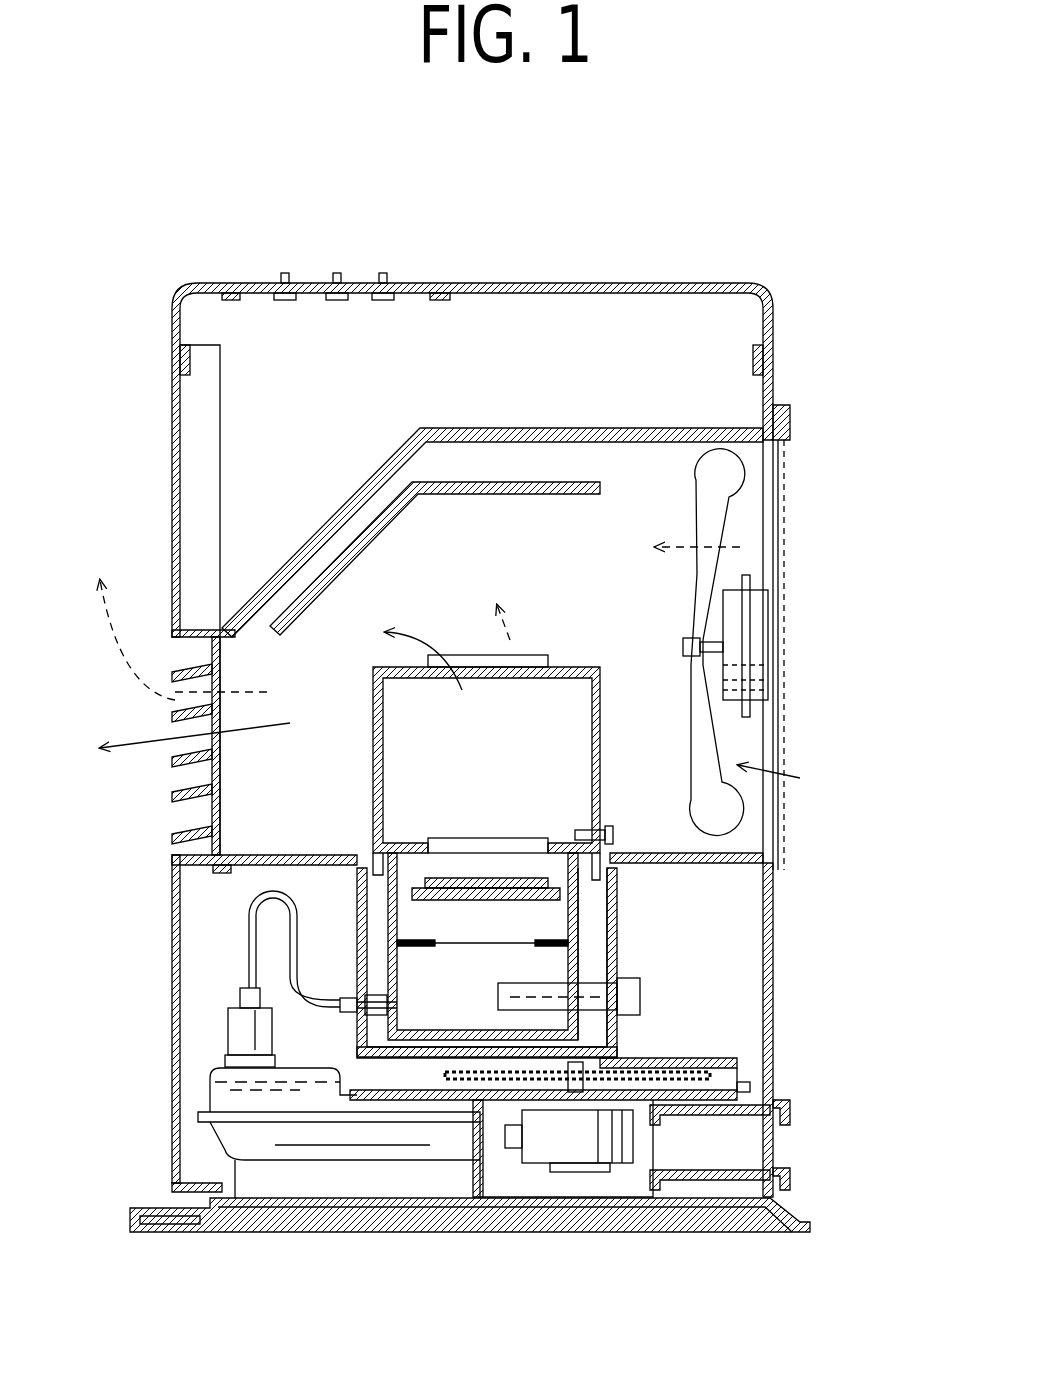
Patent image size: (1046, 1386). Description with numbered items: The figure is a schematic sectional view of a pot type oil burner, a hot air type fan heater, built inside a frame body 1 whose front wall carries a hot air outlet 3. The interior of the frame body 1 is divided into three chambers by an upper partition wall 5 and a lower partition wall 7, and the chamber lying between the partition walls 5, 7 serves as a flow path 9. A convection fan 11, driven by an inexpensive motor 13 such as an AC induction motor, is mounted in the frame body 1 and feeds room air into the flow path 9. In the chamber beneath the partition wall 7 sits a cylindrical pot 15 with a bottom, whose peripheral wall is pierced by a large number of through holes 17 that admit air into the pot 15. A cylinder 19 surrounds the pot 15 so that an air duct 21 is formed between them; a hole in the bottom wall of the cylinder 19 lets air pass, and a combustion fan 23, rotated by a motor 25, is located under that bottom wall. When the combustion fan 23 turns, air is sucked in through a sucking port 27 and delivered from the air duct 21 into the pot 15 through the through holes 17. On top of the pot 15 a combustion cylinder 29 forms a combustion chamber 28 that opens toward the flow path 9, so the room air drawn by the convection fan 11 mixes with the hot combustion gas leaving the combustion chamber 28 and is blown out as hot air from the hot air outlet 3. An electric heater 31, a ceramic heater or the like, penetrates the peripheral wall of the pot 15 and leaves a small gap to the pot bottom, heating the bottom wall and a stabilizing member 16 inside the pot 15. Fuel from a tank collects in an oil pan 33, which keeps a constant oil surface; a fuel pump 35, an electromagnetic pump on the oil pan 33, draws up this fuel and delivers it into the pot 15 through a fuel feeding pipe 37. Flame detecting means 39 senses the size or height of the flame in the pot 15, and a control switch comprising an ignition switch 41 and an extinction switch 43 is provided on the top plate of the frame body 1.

The frame body 1 is at (700, 283).
The hot air outlet 3 is at (172, 718).
The partition wall 5 is at (645, 428).
The partition wall 7 is at (712, 870).
The flow path 9 is at (490, 537).
The convection fan 11 is at (745, 522).
The motor 13 is at (765, 625).
The pot 15 is at (478, 1004).
The stabilizing member 16 is at (515, 878).
The through holes 17 is at (362, 900).
The cylinder 19 is at (352, 938).
The air duct 21 is at (600, 922).
The combustion fan 23 is at (615, 1090).
The motor 25 is at (570, 1150).
The sucking port 27 is at (750, 1140).
The combustion chamber 28 is at (470, 715).
The combustion cylinder 29 is at (600, 727).
The electric heater 31 is at (640, 995).
The oil pan 33 is at (275, 1150).
The fuel pump 35 is at (245, 1040).
The fuel feeding pipe 37 is at (245, 965).
The flame detecting means 39 is at (607, 833).
The ignition switch 41 is at (337, 273).
The extinction switch 43 is at (285, 273).